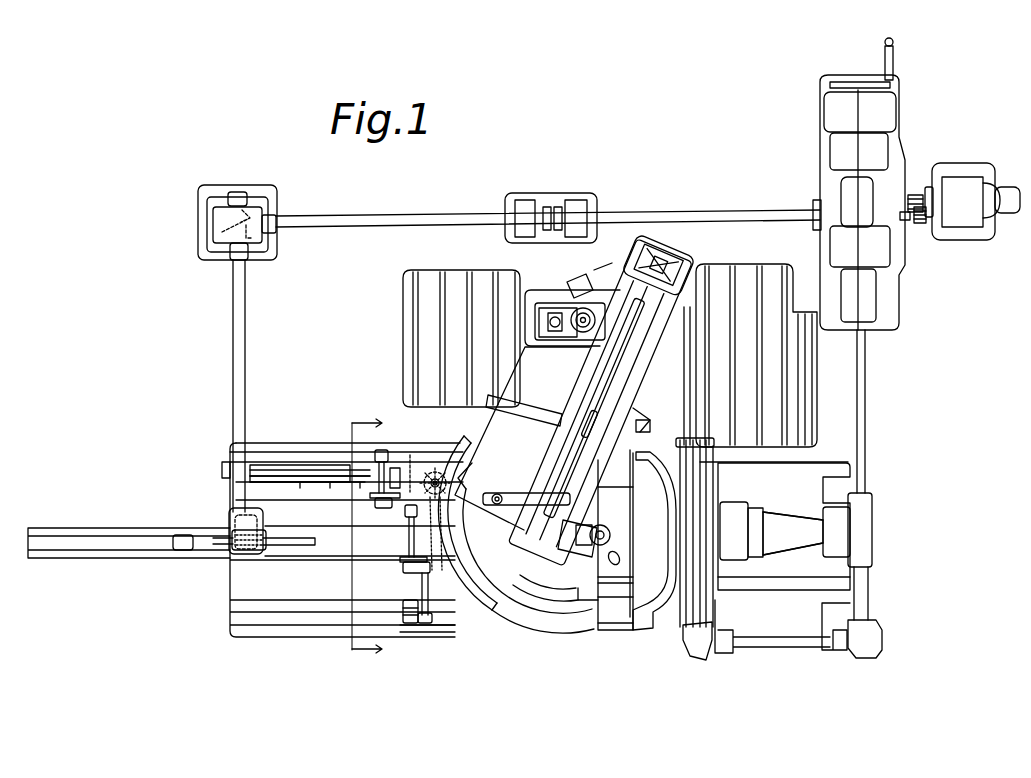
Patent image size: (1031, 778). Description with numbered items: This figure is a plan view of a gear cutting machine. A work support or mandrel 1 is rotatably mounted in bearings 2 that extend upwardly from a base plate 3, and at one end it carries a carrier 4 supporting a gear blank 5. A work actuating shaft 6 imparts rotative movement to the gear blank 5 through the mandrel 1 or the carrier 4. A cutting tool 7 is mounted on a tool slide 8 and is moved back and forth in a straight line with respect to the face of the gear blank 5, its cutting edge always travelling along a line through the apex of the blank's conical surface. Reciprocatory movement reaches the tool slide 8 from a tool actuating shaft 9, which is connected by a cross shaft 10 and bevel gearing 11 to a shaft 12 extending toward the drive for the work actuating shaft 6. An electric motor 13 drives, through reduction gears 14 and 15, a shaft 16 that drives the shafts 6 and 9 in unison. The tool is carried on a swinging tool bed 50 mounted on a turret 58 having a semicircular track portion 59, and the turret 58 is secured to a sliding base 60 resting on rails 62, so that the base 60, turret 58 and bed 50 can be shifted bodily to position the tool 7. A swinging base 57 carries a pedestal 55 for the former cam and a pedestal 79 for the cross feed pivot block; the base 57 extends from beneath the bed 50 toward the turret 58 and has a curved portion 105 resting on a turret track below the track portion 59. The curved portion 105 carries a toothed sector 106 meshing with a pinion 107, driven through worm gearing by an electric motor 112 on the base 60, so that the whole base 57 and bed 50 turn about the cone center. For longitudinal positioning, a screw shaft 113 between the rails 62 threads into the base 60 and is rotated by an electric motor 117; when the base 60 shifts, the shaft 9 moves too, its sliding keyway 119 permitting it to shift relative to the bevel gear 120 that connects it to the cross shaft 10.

The mandrel 1 is at (793, 530).
The bearings 2 is at (853, 78).
The base plate 3 is at (757, 577).
The carrier 4 is at (688, 620).
The gear blank 5 is at (645, 647).
The work actuating shaft 6 is at (865, 442).
The cutting tool 7 is at (650, 426).
The tool slide 8 is at (622, 383).
The tool actuating shaft 9 is at (340, 524).
The cross shaft 10 is at (234, 378).
The bevel gearing 11 is at (232, 238).
The shaft 12 is at (701, 211).
The electric motor 13 is at (961, 187).
The reduction gear 14 is at (916, 195).
The reduction gear 15 is at (921, 224).
The shaft 16 is at (905, 222).
The tool bed 50 is at (528, 605).
The pedestal 55 is at (640, 257).
The swinging base 57 is at (537, 377).
The turret 58 is at (591, 628).
The semicircular track portion 59 is at (574, 637).
The sliding base 60 is at (620, 632).
The rails 62 is at (322, 452).
The pedestal 79 is at (548, 308).
The curved portion 105 is at (505, 615).
The toothed sector 106 is at (440, 622).
The pinion 107 is at (437, 470).
The electric motor 112 is at (410, 610).
The screw shaft 113 is at (283, 480).
The electric motor 117 is at (406, 478).
The sliding keyway 119 is at (305, 548).
The bevel gear 120 is at (246, 552).